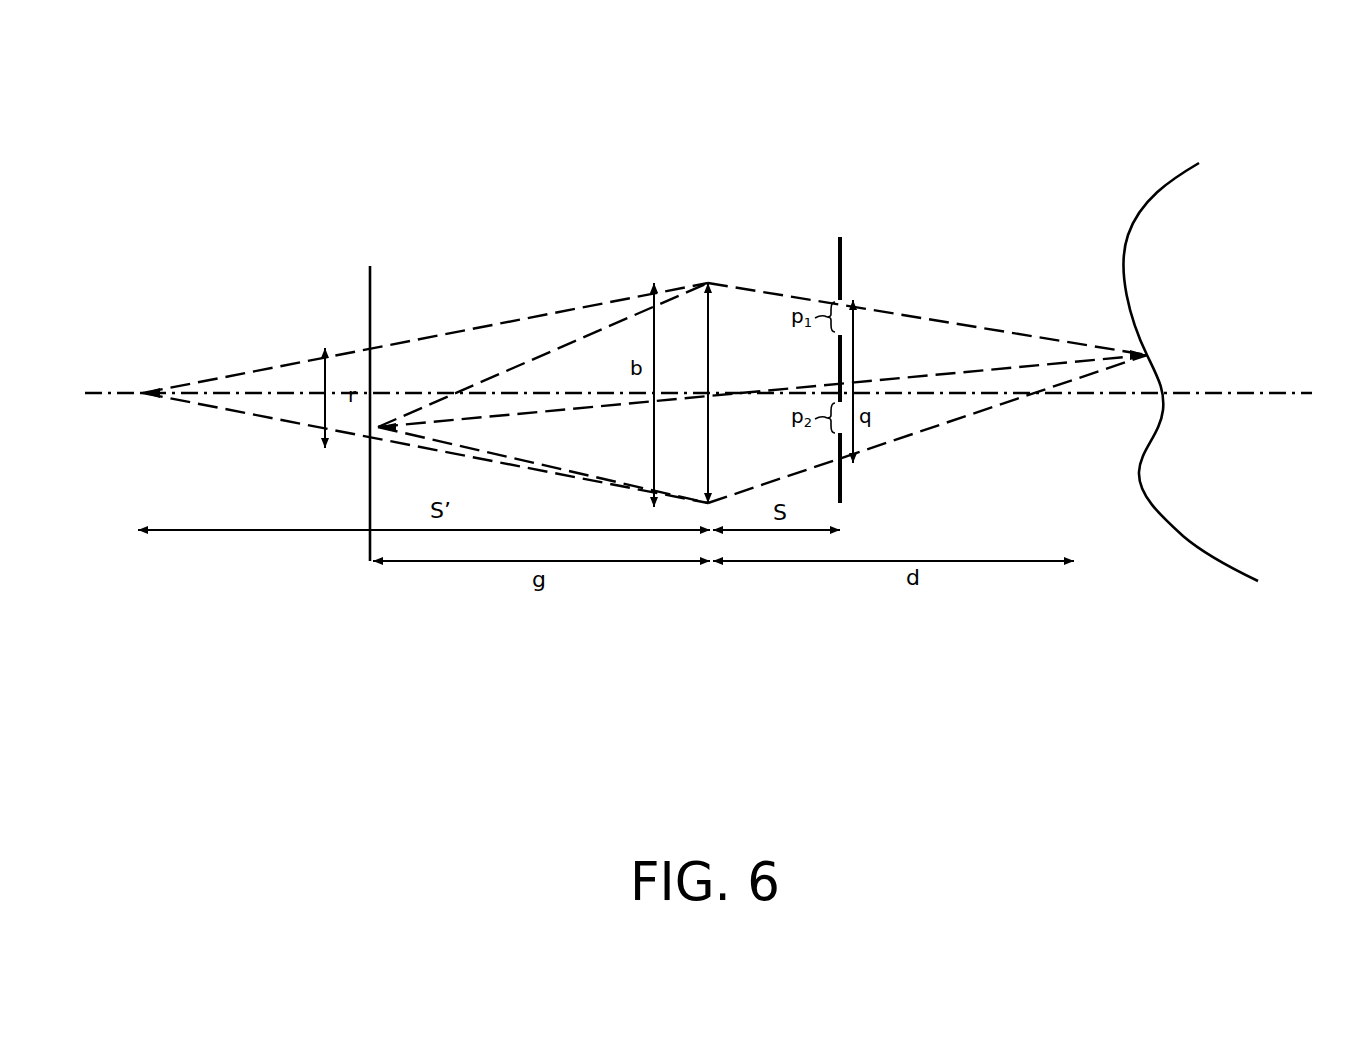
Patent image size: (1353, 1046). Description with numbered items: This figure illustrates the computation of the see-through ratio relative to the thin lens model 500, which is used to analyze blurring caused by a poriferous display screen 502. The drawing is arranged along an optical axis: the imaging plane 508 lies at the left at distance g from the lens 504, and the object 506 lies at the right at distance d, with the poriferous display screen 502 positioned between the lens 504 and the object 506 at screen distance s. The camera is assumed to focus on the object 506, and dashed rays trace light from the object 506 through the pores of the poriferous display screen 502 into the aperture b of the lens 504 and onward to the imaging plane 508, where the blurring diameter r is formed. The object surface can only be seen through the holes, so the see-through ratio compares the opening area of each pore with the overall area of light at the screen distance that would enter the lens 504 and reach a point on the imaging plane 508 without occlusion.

The thin lens model 500 is at (731, 46).
The poriferous display screen 502 is at (841, 329).
The lens 504 is at (723, 285).
The object 506 is at (1138, 206).
The imaging plane 508 is at (373, 373).